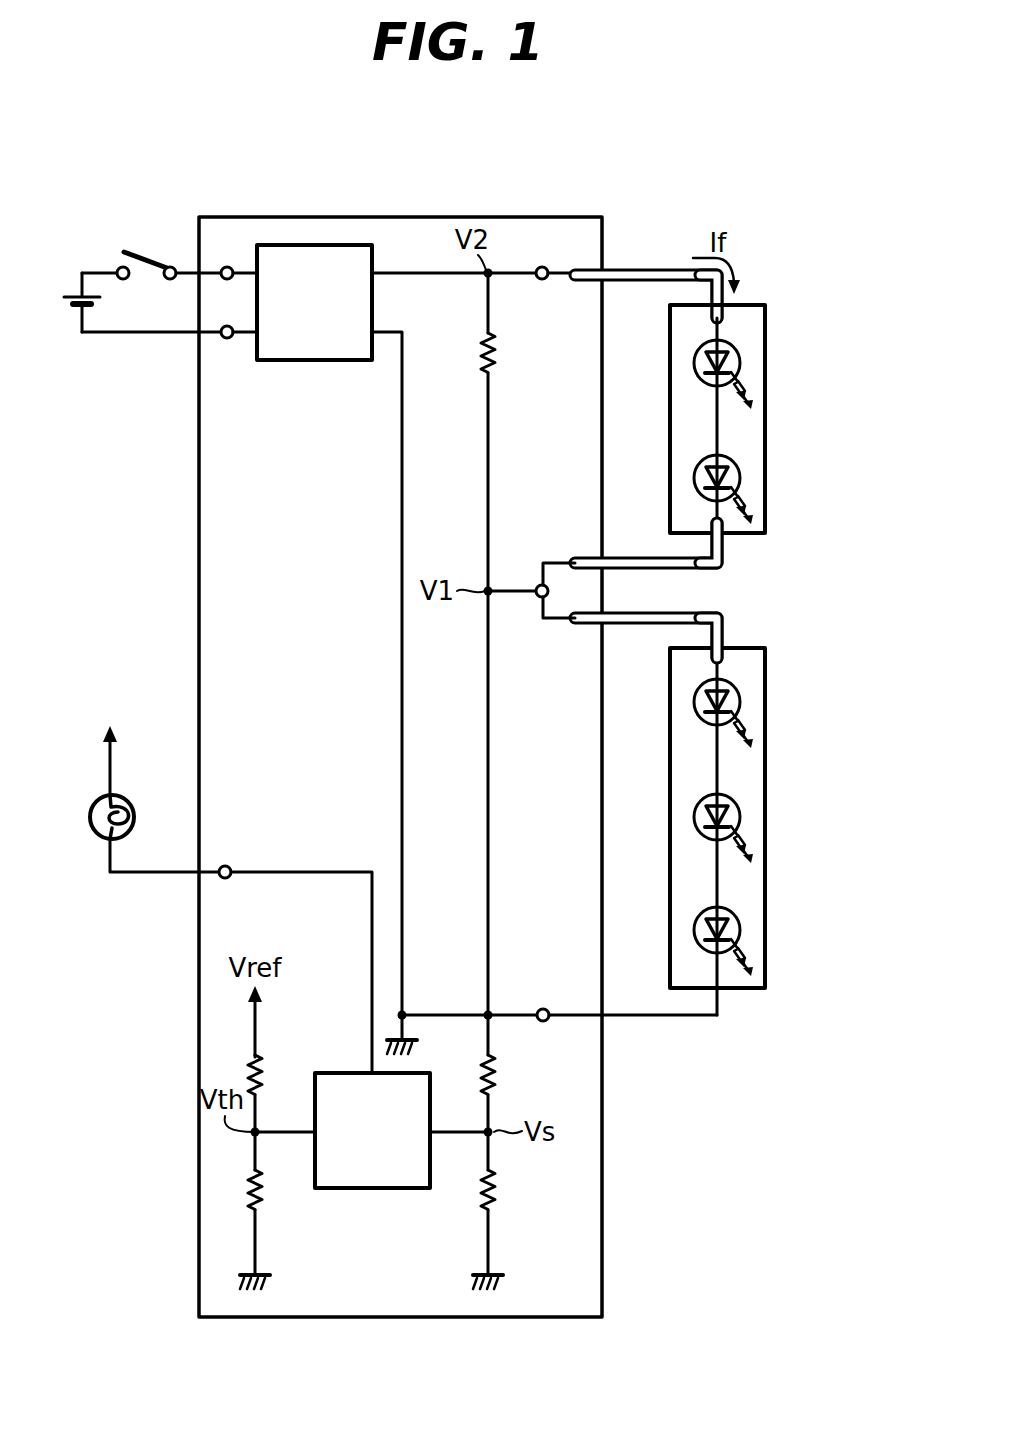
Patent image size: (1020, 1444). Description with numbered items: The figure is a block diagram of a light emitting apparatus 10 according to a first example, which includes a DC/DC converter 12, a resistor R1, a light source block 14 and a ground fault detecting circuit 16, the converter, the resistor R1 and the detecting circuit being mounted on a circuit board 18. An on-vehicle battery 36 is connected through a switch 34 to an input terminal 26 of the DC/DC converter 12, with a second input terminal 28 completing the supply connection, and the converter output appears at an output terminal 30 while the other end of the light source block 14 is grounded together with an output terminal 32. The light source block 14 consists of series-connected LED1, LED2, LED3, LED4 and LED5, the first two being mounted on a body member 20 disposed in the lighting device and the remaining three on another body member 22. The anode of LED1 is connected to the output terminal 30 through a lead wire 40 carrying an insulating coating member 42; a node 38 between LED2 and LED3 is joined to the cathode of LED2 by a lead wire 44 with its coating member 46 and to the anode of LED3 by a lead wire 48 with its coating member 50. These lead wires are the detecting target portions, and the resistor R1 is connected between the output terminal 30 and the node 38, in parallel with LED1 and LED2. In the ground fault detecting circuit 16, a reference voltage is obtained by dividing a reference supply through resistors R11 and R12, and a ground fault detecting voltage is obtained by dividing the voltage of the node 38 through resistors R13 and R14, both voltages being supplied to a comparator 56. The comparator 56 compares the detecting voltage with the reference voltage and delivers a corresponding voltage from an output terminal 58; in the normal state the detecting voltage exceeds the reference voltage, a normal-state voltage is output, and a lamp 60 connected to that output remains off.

The light emitting apparatus 10 is at (410, 180).
The DC/DC converter 12 is at (315, 361).
The light source block 14 is at (765, 280).
The ground fault detecting circuit 16 is at (372, 1146).
The circuit board 18 is at (529, 216).
The body member 20 is at (760, 415).
The body member 22 is at (760, 830).
The input terminal 26 is at (226, 267).
The input terminal 28 is at (226, 339).
The output terminal 30 is at (542, 267).
The output terminal 32 is at (545, 1008).
The switch 34 is at (144, 257).
The on-vehicle battery 36 is at (104, 297).
The node 38 is at (542, 599).
The lead wire 40 is at (638, 268).
The coating member 42 is at (672, 268).
The lead wire 44 is at (640, 556).
The coating member 46 is at (730, 557).
The lead wire 48 is at (635, 626).
The coating member 50 is at (728, 631).
The comparator 56 is at (340, 1073).
The output terminal 58 is at (227, 866).
The lamp 60 is at (135, 810).
The resistor R1 is at (469, 642).
The resistor R11 is at (285, 1075).
The resistor R12 is at (285, 1195).
The resistor R13 is at (518, 1078).
The resistor R14 is at (518, 1190).
The LED LED1 is at (740, 365).
The LED LED2 is at (740, 480).
The LED LED3 is at (740, 704).
The LED LED4 is at (740, 819).
The LED LED5 is at (740, 932).